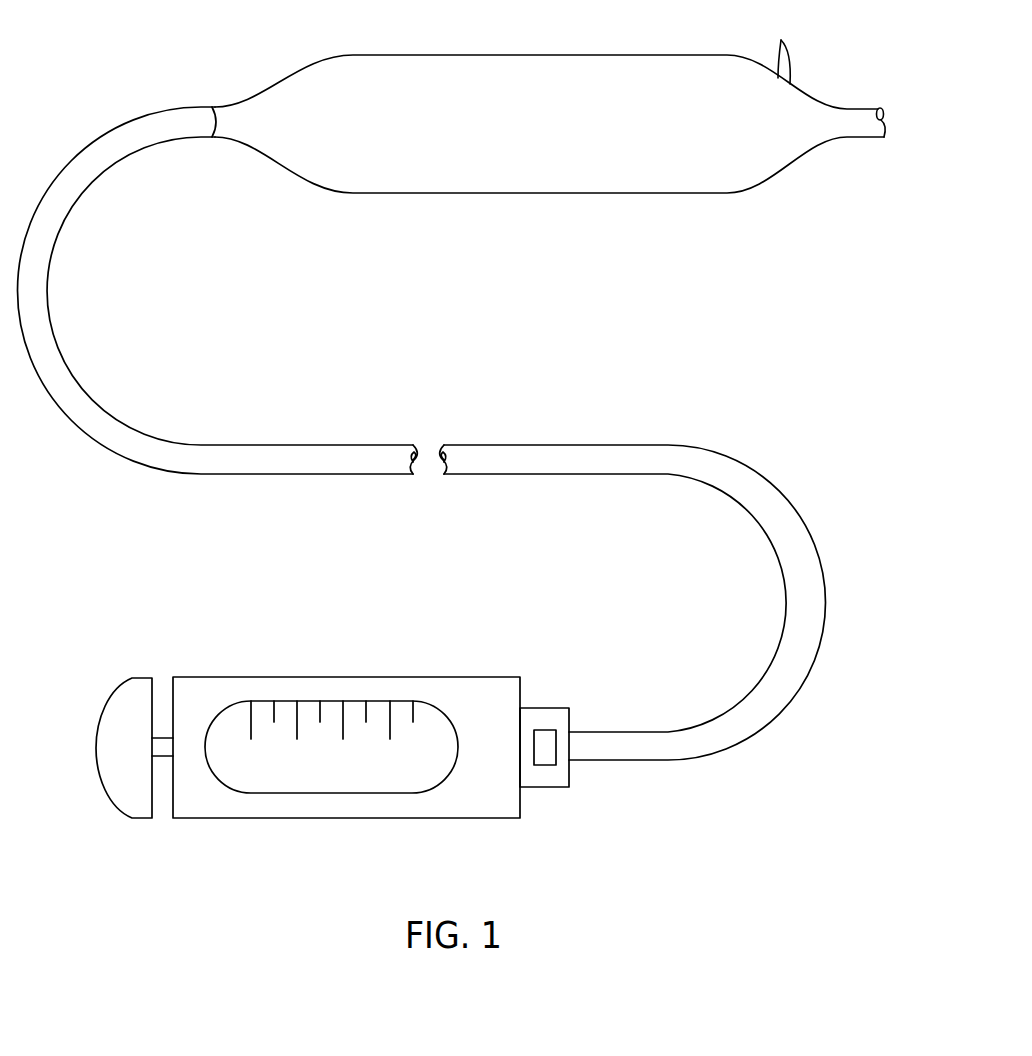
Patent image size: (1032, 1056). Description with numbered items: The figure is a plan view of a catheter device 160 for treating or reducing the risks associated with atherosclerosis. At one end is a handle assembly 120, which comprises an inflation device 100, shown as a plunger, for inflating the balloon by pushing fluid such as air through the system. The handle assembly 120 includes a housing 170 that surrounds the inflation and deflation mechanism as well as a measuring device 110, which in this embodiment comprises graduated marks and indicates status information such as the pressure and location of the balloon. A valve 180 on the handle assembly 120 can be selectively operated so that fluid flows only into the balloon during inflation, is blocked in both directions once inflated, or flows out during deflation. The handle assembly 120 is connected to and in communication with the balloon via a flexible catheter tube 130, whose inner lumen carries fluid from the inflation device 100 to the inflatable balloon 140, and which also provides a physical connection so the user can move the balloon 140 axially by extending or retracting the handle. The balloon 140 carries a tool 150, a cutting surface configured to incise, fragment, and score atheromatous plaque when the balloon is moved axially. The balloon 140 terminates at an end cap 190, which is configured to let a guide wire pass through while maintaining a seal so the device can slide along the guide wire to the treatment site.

The inflation device 100 is at (142, 677).
The measuring device 110 is at (310, 700).
The handle assembly 120 is at (552, 826).
The catheter tube 130 is at (826, 597).
The inflatable balloon 140 is at (336, 56).
The tool 150 is at (791, 61).
The catheter device 160 is at (861, 258).
The housing 170 is at (403, 677).
The valve 180 is at (543, 730).
The end cap 190 is at (880, 108).